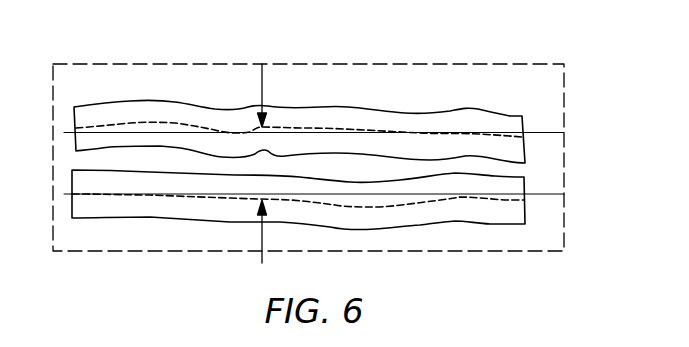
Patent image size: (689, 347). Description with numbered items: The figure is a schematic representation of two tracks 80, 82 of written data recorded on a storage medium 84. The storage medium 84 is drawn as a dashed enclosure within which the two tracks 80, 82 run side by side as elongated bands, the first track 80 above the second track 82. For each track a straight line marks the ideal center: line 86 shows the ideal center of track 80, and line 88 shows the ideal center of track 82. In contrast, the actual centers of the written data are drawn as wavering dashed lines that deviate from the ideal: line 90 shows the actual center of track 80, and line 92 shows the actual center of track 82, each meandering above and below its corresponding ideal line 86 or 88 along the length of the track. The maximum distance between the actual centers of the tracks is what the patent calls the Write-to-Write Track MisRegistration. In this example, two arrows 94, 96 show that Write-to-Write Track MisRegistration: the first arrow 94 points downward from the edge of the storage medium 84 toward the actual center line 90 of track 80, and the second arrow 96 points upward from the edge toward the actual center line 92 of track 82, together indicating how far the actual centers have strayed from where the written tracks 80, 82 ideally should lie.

The track 80 is at (495, 120).
The track 82 is at (488, 215).
The storage medium 84 is at (126, 78).
The line 86 is at (545, 132).
The line 88 is at (545, 194).
The line 90 is at (150, 122).
The line 92 is at (368, 205).
The arrow 94 is at (264, 88).
The arrow 96 is at (258, 237).